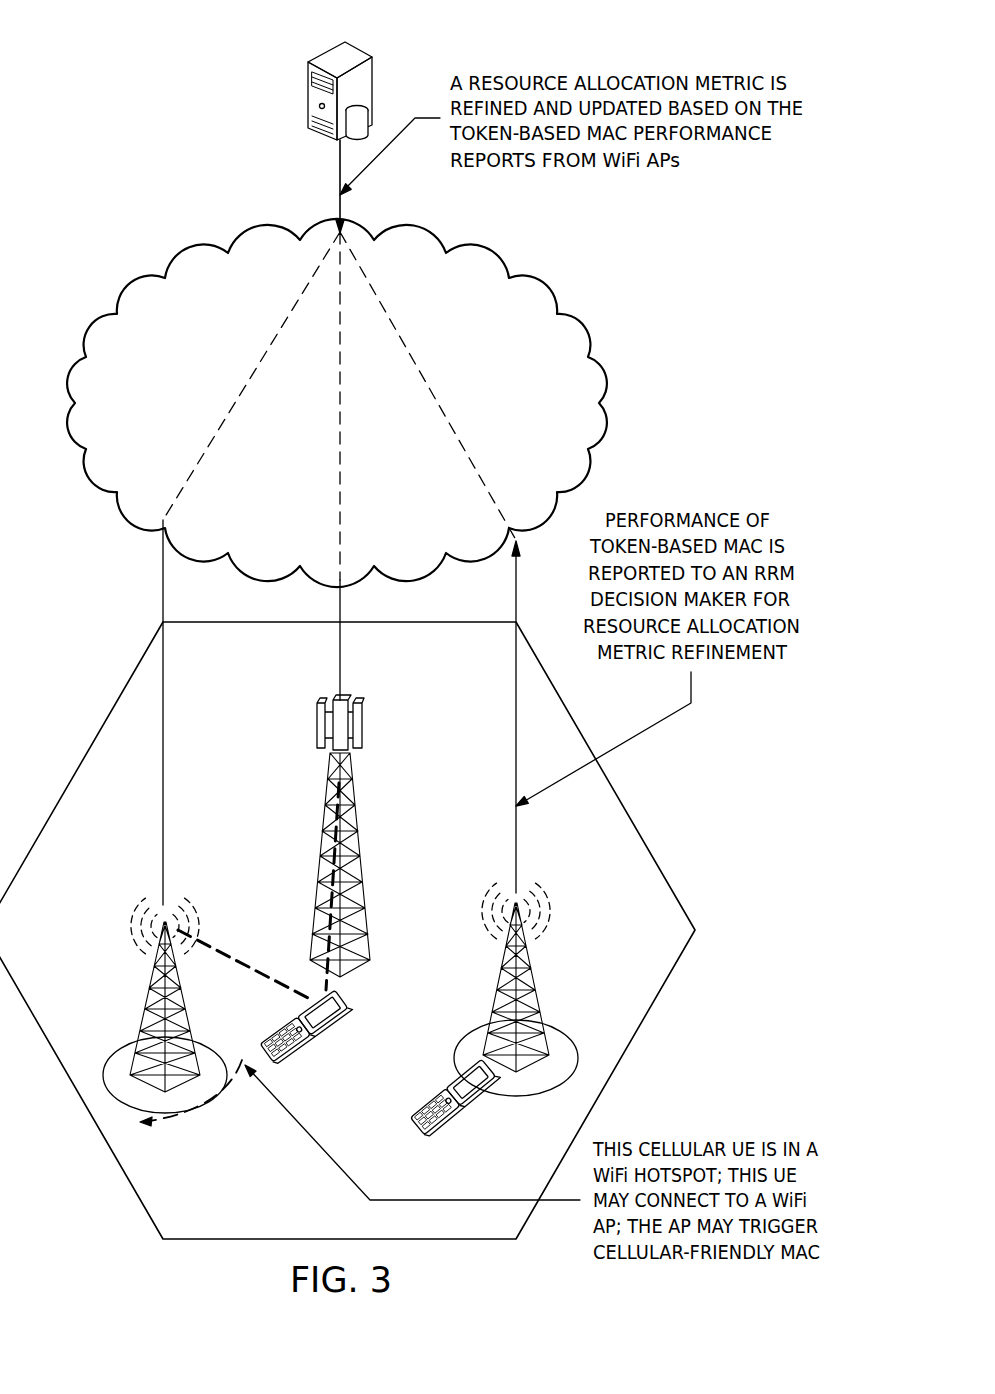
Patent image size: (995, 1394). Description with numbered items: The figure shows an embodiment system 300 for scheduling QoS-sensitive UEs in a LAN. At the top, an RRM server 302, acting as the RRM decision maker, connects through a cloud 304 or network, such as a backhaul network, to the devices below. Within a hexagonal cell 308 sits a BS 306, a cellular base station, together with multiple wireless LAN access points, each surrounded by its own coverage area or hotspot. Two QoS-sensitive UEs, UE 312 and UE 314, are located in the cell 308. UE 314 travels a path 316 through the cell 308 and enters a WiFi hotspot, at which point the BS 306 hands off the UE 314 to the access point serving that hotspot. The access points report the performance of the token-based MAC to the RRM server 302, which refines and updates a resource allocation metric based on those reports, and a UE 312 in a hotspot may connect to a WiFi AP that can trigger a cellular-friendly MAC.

The system 300 is at (90, 68).
The RRM server 302 is at (308, 92).
The cloud 304 is at (92, 316).
The BS 306 is at (318, 855).
The cell 308 is at (66, 768).
The QoS-sensitive UE 312 is at (432, 1100).
The QoS-sensitive UE 314 is at (300, 1050).
The path 316 is at (246, 1055).